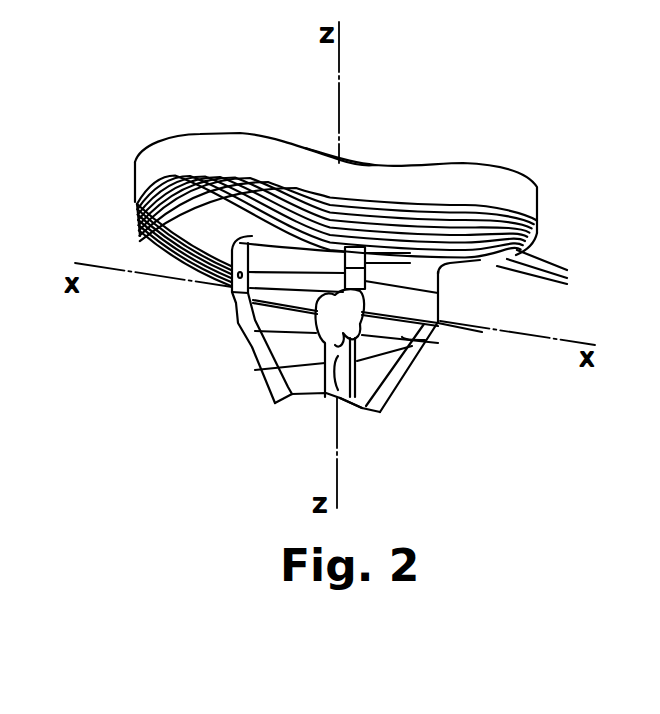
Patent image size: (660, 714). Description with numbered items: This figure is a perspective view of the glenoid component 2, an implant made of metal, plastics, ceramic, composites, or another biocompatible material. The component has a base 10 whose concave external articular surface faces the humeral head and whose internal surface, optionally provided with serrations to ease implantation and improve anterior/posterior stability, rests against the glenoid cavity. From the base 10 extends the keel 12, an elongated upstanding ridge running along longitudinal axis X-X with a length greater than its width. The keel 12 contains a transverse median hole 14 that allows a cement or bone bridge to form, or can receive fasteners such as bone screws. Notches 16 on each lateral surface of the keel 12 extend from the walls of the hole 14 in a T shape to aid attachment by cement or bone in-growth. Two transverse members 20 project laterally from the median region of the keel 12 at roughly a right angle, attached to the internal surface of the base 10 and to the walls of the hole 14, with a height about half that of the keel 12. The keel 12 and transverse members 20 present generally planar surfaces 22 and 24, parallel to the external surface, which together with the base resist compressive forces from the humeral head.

The base 10 is at (355, 199).
The glenoid component 2 is at (455, 298).
The keel 12 is at (354, 282).
The transverse members 20 is at (369, 256).
The planar surface 22 is at (482, 335).
The transverse hole 14 is at (268, 371).
The notches 16 is at (280, 317).
The planar surface 24 is at (343, 407).